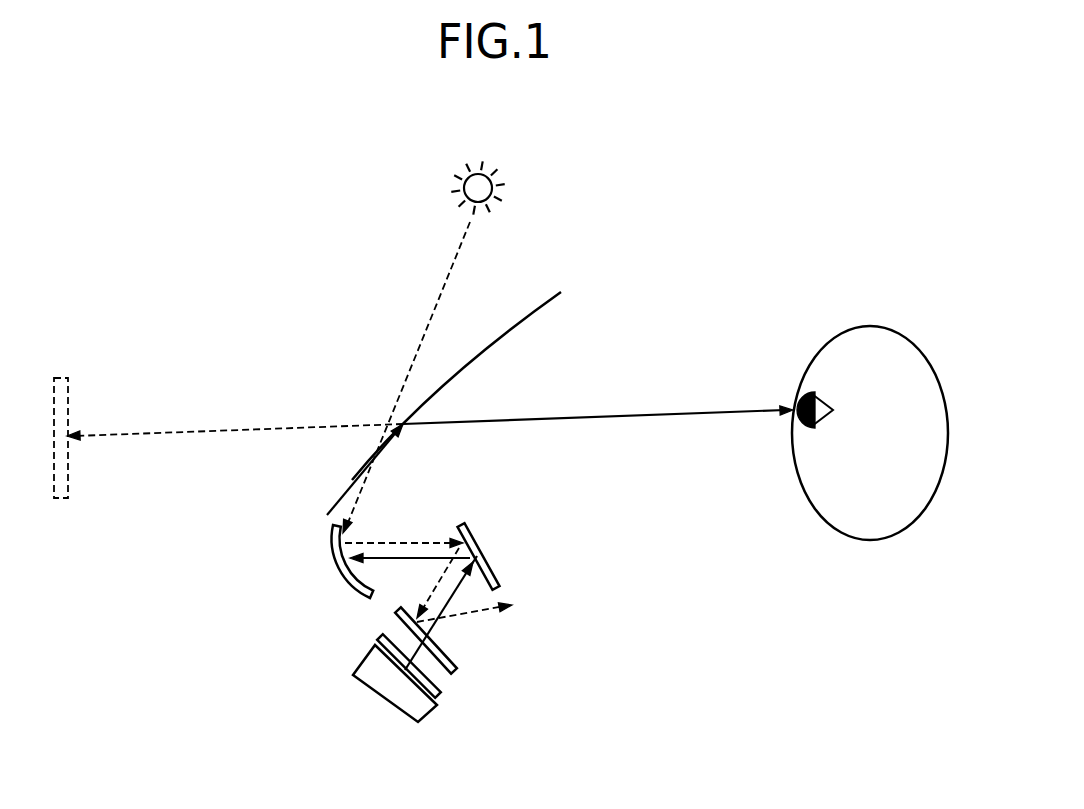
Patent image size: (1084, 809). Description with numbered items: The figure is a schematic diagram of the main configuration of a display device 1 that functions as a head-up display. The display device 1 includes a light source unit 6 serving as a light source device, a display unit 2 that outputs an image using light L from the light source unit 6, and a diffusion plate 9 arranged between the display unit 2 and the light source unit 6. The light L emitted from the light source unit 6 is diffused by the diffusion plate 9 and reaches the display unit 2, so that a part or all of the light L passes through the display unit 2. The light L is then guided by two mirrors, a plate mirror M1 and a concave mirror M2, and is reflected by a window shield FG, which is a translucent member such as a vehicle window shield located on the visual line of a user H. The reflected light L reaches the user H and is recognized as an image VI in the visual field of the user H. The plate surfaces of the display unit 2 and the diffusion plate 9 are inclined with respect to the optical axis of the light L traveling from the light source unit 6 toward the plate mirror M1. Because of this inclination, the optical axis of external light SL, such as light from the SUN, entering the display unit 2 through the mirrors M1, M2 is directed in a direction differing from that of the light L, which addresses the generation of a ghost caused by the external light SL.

The display device 1 is at (558, 681).
The display unit 2 is at (457, 673).
The light source unit 6 is at (355, 668).
The diffusion plate 9 is at (438, 698).
The plate mirror M1 is at (494, 553).
The concave mirror M2 is at (337, 569).
The window shield FG is at (483, 349).
The light L is at (628, 417).
The user H is at (869, 556).
The image VI is at (62, 378).
The external light SL is at (440, 290).
The sun SUN is at (512, 150).